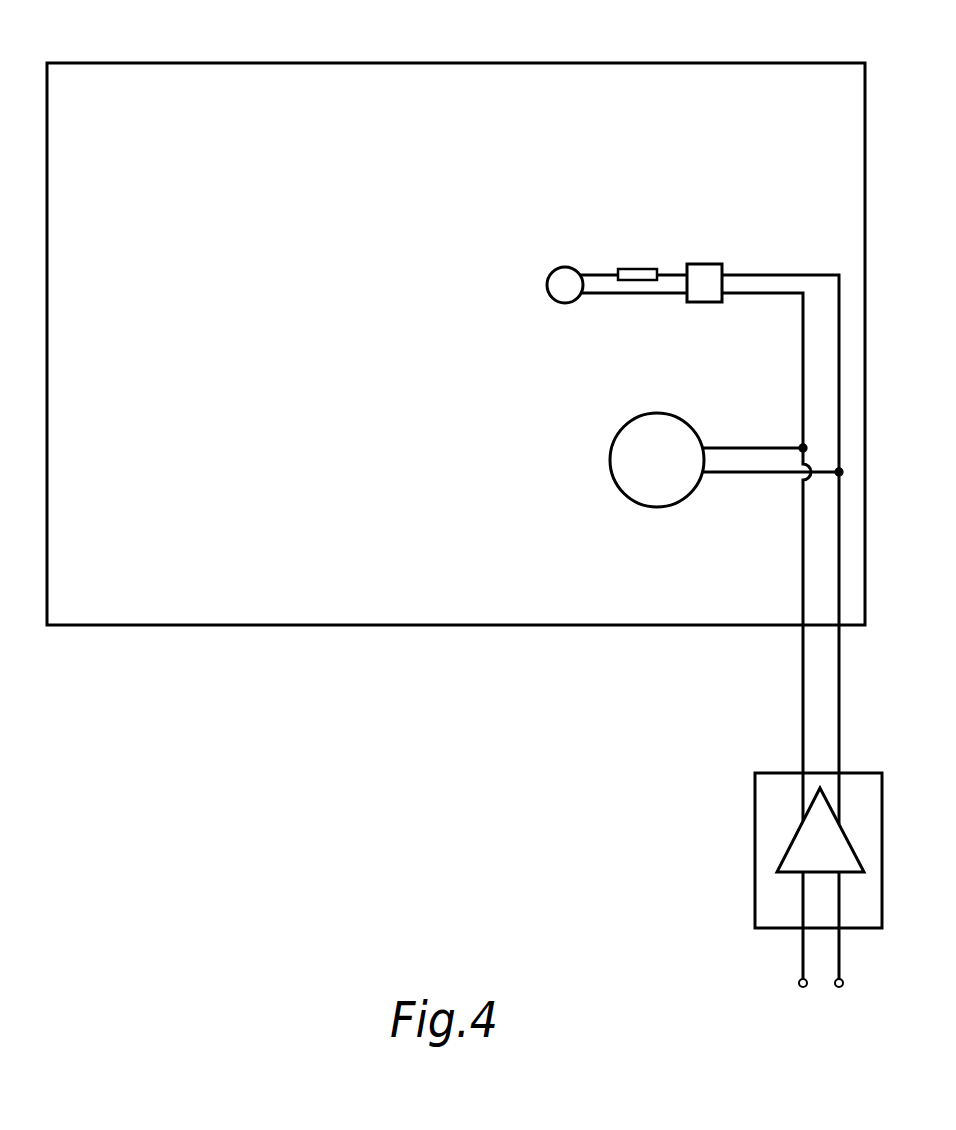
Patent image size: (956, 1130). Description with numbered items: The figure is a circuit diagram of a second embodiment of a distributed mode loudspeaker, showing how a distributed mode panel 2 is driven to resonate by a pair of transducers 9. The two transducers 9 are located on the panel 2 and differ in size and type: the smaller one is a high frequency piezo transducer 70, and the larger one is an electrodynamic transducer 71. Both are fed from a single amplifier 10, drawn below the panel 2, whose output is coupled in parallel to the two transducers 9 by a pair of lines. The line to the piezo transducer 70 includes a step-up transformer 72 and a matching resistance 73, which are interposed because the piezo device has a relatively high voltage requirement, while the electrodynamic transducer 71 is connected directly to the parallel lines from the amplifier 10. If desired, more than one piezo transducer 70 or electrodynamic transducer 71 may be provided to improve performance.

The distributed mode panel 2 is at (145, 83).
The transducers 9 is at (512, 284).
The amplifier 10 is at (770, 812).
The high frequency piezo transducer 70 is at (563, 273).
The electrodynamic transducer 71 is at (645, 488).
The step-up transformer 72 is at (704, 272).
The matching resistance 73 is at (633, 270).